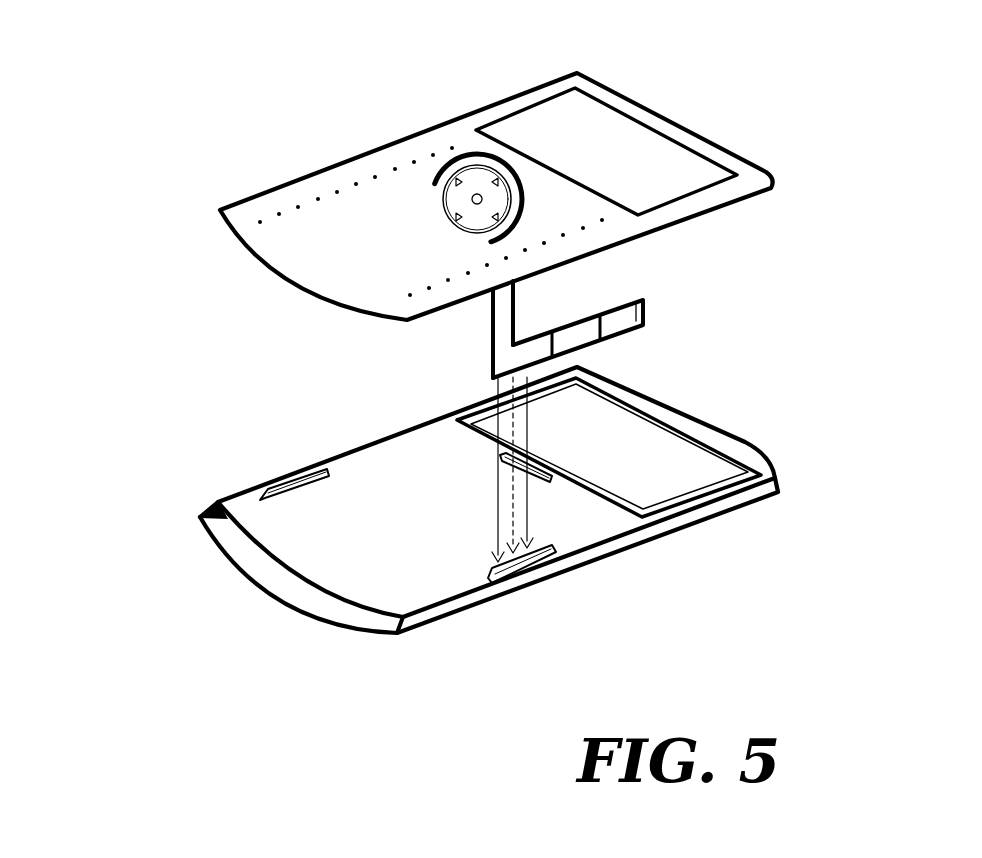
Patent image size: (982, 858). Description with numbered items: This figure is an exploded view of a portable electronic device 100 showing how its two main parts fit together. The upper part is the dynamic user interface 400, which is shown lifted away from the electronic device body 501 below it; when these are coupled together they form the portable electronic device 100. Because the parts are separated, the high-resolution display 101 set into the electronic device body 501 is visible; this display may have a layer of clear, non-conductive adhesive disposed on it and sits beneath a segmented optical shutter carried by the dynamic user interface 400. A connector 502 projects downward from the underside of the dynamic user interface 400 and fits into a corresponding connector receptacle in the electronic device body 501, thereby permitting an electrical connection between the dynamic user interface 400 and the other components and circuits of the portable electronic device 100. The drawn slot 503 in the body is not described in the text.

The dynamic user interface 400 is at (712, 104).
The connector 502 is at (643, 300).
The portable electronic device 100 is at (383, 620).
The electronic device body 501 is at (370, 533).
The high-resolution display 101 is at (667, 450).
The slot 503 is at (567, 550).